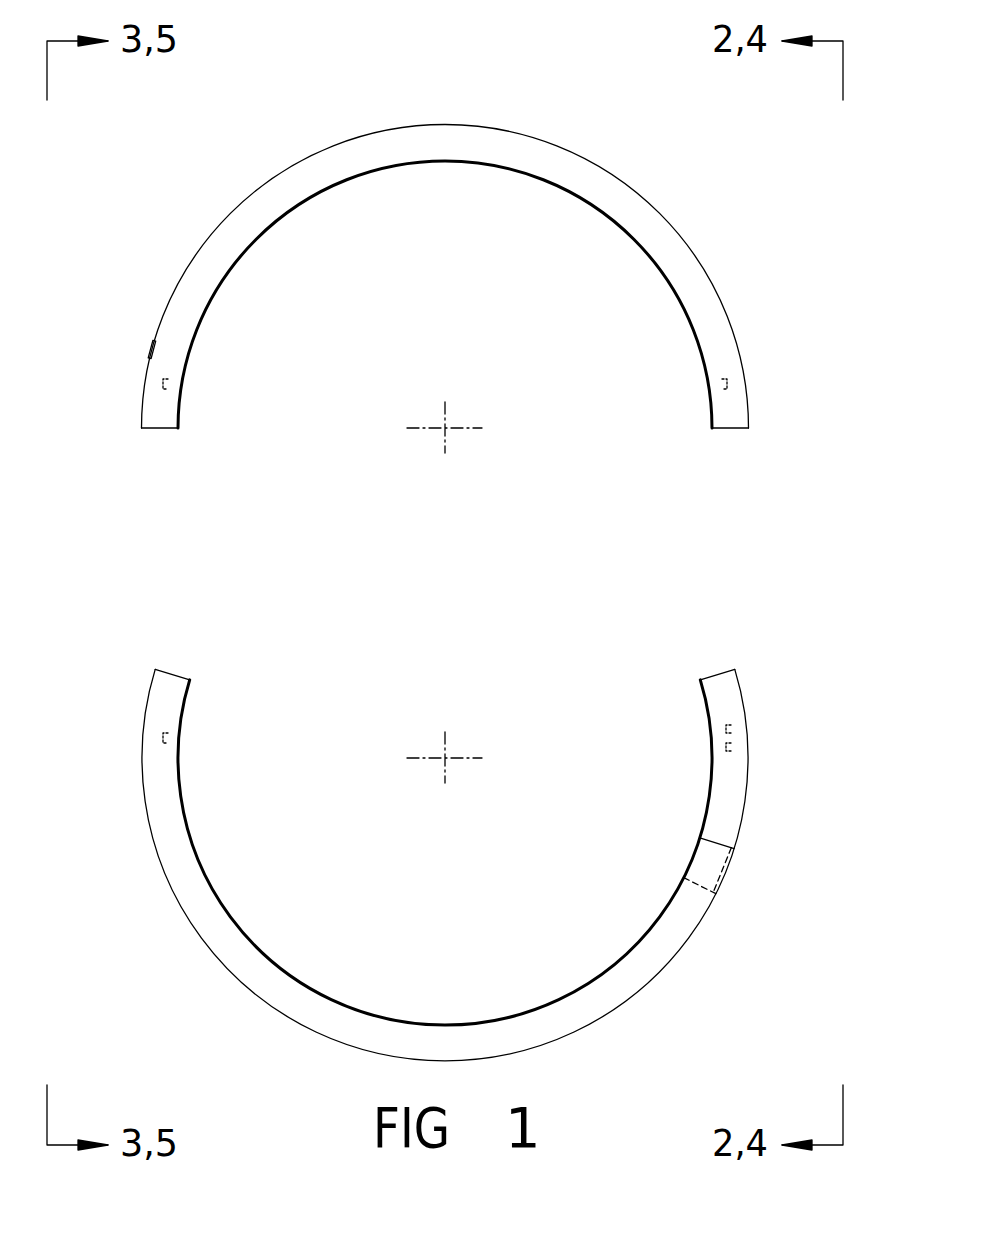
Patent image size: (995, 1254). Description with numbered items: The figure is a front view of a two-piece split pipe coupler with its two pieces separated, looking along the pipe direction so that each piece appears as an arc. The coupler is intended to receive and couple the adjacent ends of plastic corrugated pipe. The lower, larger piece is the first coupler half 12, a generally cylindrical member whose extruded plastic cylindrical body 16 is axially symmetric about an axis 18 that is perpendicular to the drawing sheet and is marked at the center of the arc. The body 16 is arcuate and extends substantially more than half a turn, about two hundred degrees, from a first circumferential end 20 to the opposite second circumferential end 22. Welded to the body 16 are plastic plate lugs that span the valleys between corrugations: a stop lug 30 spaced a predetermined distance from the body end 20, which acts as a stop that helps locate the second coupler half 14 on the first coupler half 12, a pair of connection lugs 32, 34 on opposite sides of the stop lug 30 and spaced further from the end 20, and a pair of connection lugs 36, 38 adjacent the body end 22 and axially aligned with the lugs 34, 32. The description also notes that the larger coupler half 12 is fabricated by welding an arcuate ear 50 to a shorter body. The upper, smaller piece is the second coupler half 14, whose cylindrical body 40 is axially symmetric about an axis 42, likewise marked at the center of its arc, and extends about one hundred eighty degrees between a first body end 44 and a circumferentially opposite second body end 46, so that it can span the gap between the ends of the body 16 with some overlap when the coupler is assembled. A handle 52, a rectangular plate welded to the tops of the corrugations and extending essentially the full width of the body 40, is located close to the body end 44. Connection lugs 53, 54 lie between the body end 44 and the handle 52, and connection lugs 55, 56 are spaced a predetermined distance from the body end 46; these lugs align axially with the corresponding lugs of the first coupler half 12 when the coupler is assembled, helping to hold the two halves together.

The first coupler half 12 is at (463, 852).
The second coupler half 14 is at (682, 237).
The cylindrical body 16 is at (218, 897).
The axis 18 is at (445, 758).
The first circumferential end 20 is at (172, 672).
The second circumferential end 22 is at (718, 672).
The stop lug 30 is at (732, 727).
The connection lug 32 is at (781, 759).
The connection lug 34 is at (732, 745).
The connection lug 36 is at (109, 750).
The connection lug 38 is at (163, 738).
The cylindrical body 40 is at (727, 315).
The axis 42 is at (445, 428).
The first body end 44 is at (165, 428).
The second body end 46 is at (725, 428).
The ear 50 is at (743, 800).
The handle 52 is at (150, 350).
The connection lug 53 is at (106, 402).
The connection lug 54 is at (163, 385).
The connection lug 55 is at (783, 402).
The connection lug 56 is at (727, 385).